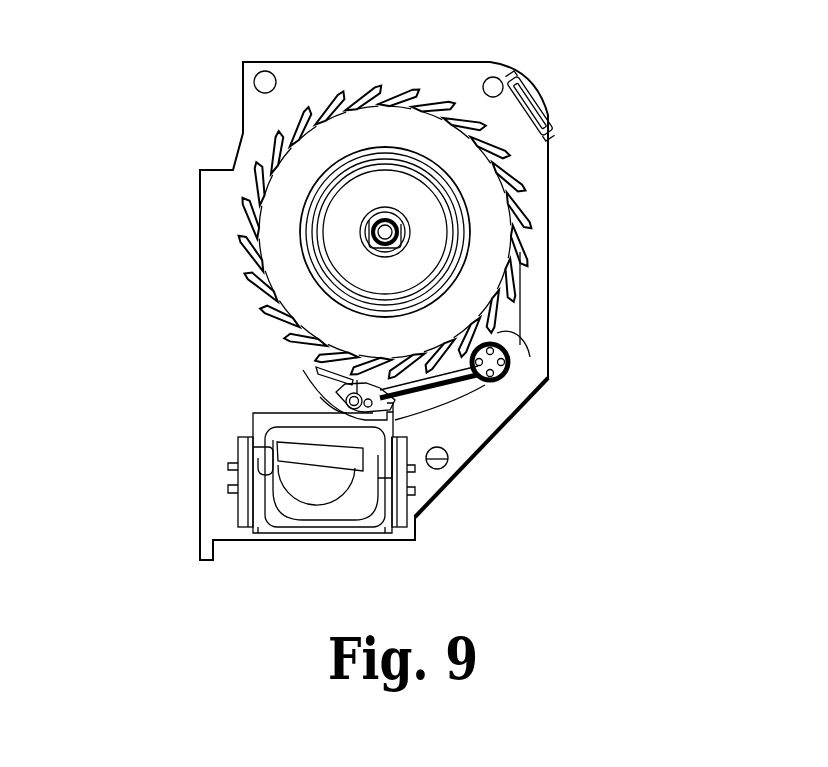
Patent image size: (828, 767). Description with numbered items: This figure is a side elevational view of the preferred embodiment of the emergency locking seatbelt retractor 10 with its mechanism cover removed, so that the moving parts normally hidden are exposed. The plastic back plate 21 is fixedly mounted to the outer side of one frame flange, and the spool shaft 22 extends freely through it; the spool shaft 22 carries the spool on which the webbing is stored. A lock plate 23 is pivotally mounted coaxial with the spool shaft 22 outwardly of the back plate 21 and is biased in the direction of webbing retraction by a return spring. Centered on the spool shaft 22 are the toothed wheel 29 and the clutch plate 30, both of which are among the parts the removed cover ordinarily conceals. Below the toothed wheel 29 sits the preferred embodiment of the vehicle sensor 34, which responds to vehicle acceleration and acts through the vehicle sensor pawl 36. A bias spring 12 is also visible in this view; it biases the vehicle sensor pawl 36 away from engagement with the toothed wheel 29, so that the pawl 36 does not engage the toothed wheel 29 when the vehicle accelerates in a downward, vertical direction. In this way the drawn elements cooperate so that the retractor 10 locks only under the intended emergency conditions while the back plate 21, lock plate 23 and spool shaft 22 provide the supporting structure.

The emergency locking seatbelt retractor 10 is at (120, 52).
The bias spring 12 is at (477, 388).
The back plate 21 is at (227, 328).
The spool shaft 22 is at (400, 232).
The lock plate 23 is at (520, 340).
The toothed wheel 29 is at (477, 293).
The clutch plate 30 is at (313, 187).
The vehicle sensor 34 is at (317, 498).
The vehicle sensor pawl 36 is at (345, 382).